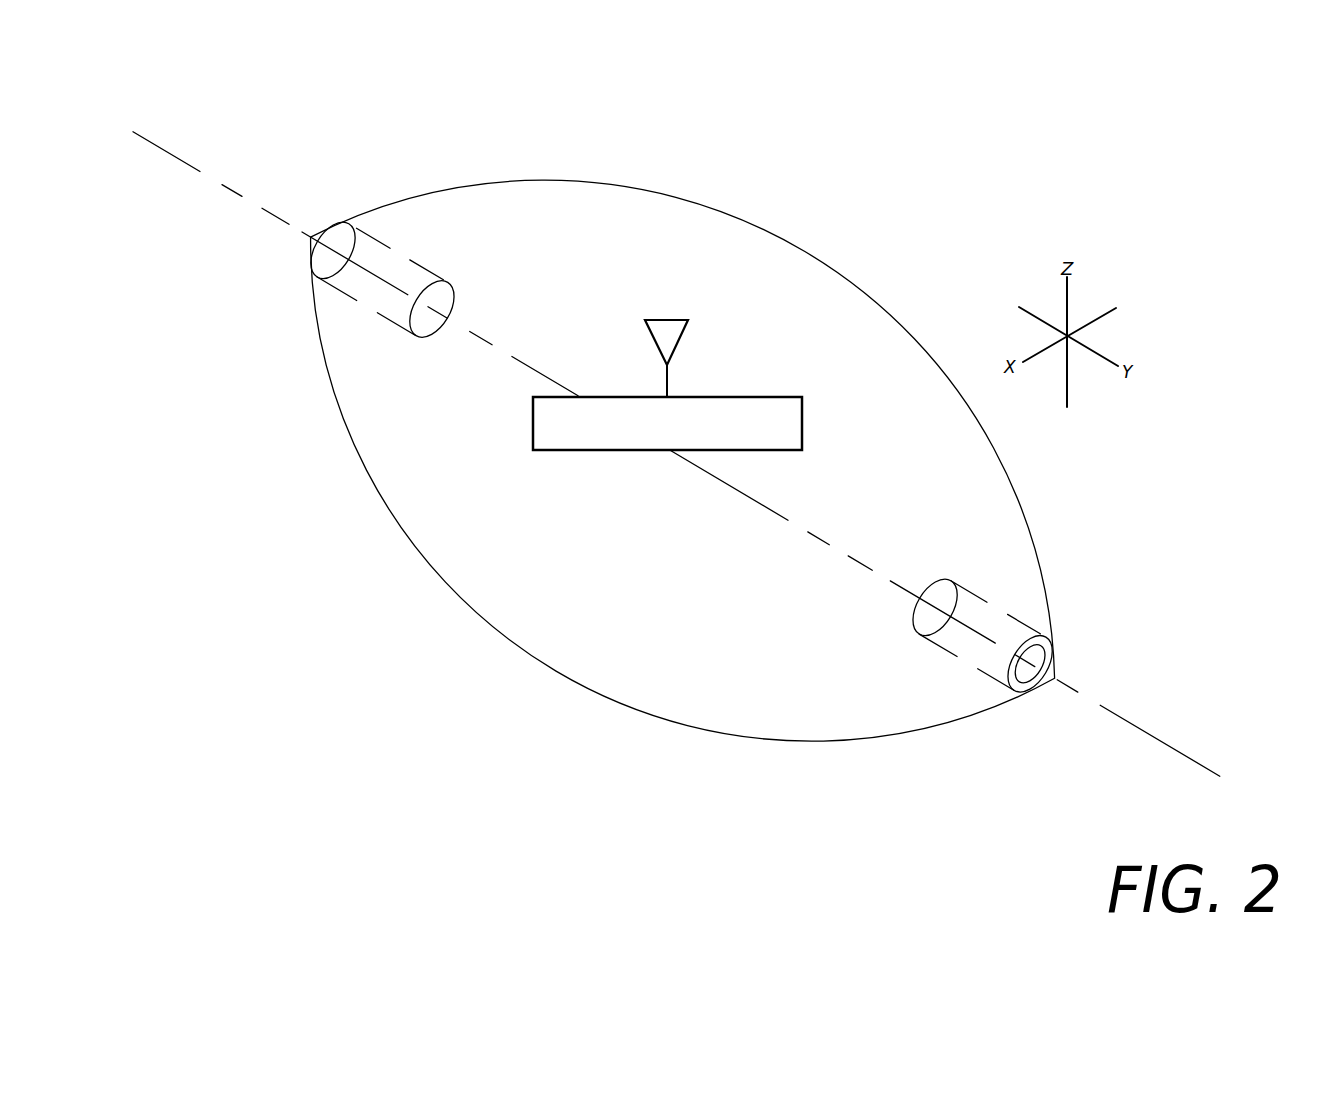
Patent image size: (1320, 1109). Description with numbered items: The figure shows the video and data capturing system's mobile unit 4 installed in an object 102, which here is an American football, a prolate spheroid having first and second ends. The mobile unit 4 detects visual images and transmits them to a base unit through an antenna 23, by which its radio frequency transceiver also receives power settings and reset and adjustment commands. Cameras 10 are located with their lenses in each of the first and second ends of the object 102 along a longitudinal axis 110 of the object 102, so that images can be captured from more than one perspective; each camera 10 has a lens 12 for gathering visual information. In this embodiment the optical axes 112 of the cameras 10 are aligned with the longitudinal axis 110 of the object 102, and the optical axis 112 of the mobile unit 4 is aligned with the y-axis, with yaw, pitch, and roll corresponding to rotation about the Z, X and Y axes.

The object 102 is at (603, 180).
The longitudinal axis 110 is at (225, 183).
The optical axis 112 is at (288, 226).
The camera 10 is at (450, 283).
The lens 12 is at (1053, 658).
The mobile unit 4 is at (667, 423).
The antenna 23 is at (680, 338).